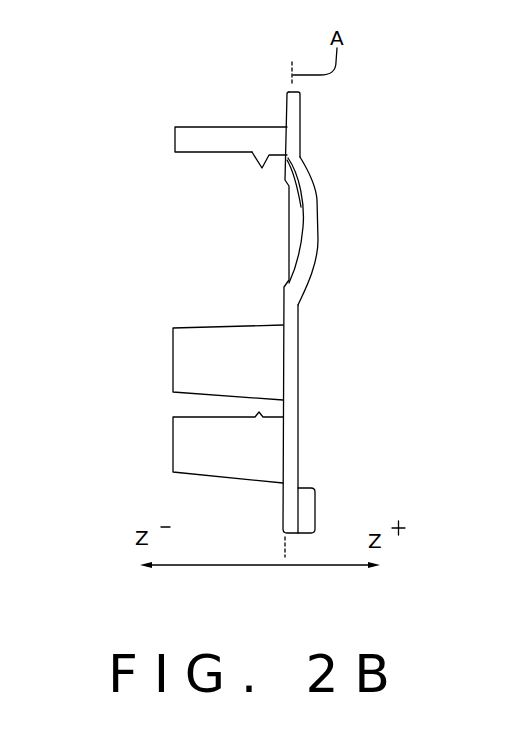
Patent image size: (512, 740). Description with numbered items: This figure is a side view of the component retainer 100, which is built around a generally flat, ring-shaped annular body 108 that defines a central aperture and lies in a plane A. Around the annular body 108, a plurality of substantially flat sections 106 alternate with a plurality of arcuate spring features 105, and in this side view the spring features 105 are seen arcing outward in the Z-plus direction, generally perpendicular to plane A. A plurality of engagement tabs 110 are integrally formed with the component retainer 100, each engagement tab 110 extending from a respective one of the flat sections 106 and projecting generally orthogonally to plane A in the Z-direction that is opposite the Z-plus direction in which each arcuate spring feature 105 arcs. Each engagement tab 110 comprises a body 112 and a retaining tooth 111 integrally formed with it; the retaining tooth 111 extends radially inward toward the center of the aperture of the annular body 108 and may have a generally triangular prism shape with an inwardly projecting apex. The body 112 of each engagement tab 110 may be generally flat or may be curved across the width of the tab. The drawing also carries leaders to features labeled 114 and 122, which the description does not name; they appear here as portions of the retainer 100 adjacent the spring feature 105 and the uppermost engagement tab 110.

The component retainer 100 is at (422, 262).
The arcuate spring feature 105 is at (317, 203).
The substantially flat section 106 is at (298, 443).
The annular body 108 is at (300, 117).
The engagement tab 110 is at (185, 443).
The retaining tooth 111 is at (260, 170).
The body 112 is at (243, 352).
The curved spring member 114 is at (255, 160).
The upper fin block 122 is at (230, 137).